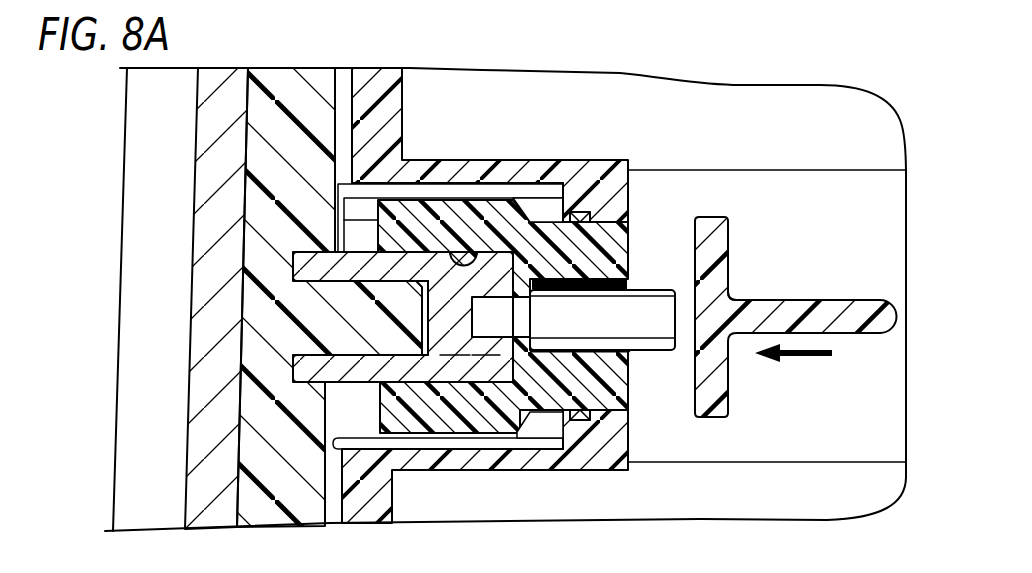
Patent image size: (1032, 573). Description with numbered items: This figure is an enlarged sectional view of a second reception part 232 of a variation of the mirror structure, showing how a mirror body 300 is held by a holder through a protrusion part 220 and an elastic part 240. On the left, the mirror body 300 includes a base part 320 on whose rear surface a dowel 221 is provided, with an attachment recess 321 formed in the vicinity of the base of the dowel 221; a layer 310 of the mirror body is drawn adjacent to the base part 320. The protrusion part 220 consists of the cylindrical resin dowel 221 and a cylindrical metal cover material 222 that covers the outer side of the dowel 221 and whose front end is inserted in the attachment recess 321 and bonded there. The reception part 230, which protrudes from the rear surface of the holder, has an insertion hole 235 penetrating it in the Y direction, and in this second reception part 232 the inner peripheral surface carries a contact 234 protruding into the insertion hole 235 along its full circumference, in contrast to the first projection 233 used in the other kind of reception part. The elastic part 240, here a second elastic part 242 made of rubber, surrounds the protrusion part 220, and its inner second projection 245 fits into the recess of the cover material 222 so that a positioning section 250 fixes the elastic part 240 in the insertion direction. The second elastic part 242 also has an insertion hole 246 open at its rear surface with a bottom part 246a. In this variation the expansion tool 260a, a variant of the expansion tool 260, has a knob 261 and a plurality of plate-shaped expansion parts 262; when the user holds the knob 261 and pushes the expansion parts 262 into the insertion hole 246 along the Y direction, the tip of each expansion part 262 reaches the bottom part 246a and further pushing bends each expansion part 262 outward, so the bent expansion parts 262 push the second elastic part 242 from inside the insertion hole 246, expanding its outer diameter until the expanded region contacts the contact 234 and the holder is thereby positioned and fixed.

The protrusion part 220 is at (418, 273).
The dowel 221 is at (397, 290).
The cover material 222 is at (413, 262).
The reception part 230 is at (624, 485).
The second reception part 232 is at (734, 436).
The first projection 233 is at (465, 375).
The contact 234 is at (578, 418).
The insertion hole 235 is at (625, 413).
The elastic part 240 is at (629, 145).
The second elastic part 242 is at (734, 196).
The second projection 245 is at (467, 256).
The insertion hole 246 is at (527, 306).
The bottom part 246a is at (555, 352).
The positioning section 250 is at (477, 370).
The expansion tool 260 is at (796, 317).
The expansion tool 260a is at (862, 307).
The knob 261 is at (778, 313).
The expansion part 262 is at (620, 320).
The mirror body 300 is at (141, 512).
The wall panel 310 is at (213, 512).
The base part 320 is at (329, 320).
The attachment recess 321 is at (320, 243).